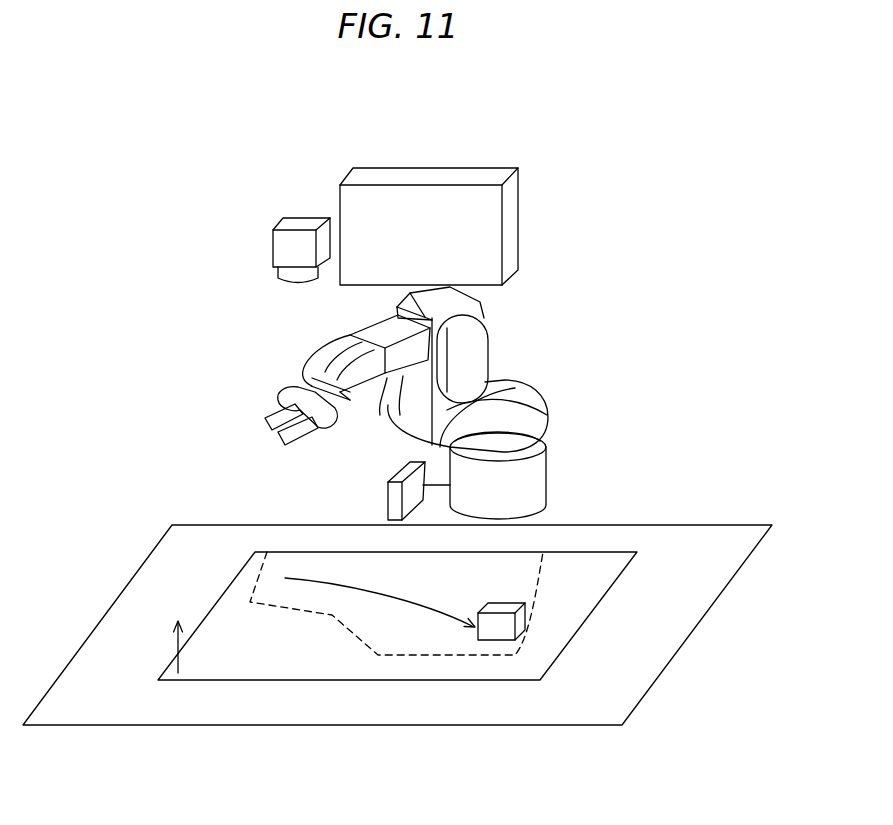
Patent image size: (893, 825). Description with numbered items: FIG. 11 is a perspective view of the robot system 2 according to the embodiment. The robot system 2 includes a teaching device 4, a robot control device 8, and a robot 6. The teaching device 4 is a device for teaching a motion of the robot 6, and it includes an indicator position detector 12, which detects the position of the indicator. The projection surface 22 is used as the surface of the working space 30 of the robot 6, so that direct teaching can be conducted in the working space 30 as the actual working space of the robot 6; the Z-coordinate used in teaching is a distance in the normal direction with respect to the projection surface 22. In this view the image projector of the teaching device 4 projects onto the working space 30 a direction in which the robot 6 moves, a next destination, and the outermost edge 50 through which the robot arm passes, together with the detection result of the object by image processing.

The robot system 2 is at (591, 218).
The teaching device 4 is at (421, 164).
The robot 6 is at (506, 336).
The robot control device 8 is at (402, 474).
The indicator position detector 12 is at (290, 248).
The projection surface 22 is at (213, 603).
The working space 30 is at (318, 657).
The outermost edge 50 is at (433, 657).